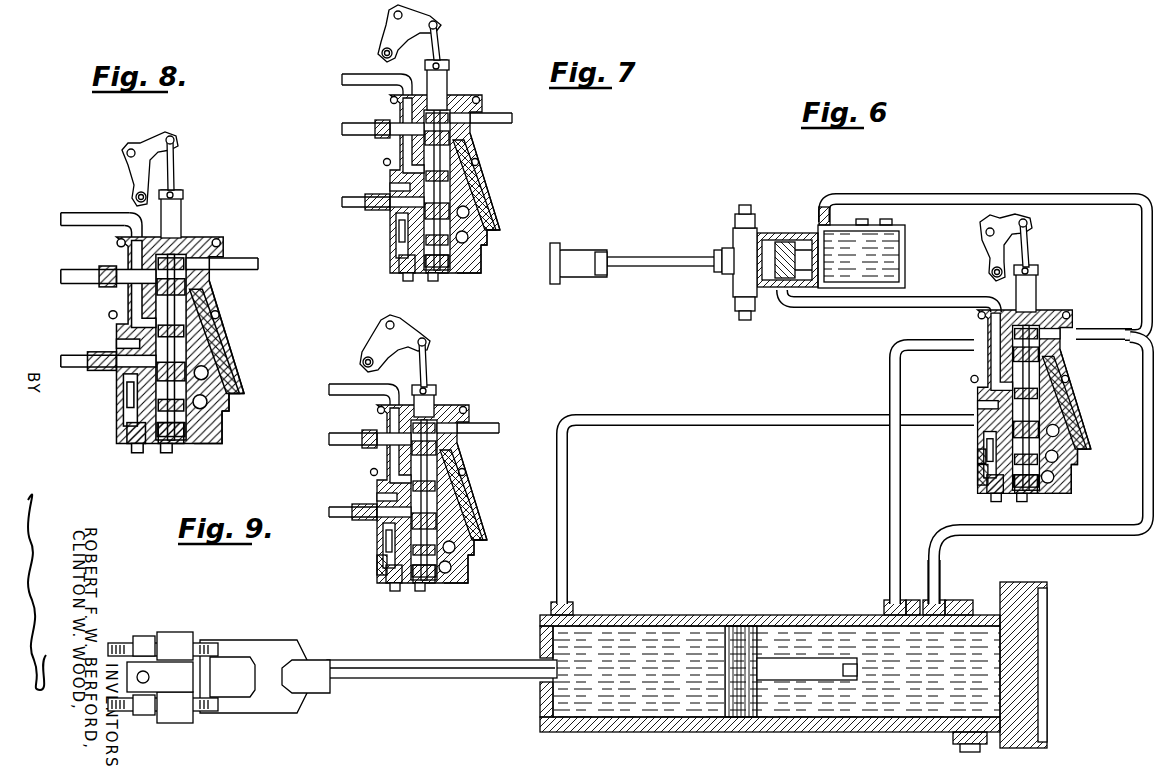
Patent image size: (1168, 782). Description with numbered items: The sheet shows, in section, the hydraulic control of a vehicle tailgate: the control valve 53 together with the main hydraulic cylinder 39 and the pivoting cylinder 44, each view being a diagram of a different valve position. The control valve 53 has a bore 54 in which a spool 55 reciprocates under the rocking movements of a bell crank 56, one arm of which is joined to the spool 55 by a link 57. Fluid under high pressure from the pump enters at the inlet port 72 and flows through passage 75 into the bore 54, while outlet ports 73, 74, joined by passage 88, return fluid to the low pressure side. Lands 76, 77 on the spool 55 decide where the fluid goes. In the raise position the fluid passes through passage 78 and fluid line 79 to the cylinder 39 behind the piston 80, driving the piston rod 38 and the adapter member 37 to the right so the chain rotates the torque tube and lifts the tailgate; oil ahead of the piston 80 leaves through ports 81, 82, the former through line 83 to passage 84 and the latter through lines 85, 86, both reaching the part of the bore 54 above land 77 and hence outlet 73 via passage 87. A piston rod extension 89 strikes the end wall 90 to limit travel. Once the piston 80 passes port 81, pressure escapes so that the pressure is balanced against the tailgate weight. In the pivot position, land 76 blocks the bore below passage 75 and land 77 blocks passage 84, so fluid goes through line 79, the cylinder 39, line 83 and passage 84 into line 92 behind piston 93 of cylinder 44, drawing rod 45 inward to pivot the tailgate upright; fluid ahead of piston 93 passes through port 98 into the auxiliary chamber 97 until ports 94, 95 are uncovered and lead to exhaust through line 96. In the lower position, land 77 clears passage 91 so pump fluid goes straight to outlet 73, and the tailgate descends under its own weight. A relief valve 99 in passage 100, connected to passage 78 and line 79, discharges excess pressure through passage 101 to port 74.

In FIG. 6, the adapter member 37 is at (275, 645).
In FIG. 6, the piston rod 38 is at (423, 667).
In FIG. 6, the main hydraulic cylinder 39 is at (673, 617).
In FIG. 6, the hydraulic cylinder 44 is at (772, 230).
In FIG. 6, the rod 45 is at (648, 257).
In FIG. 9, the control valve 53 is at (387, 570).
In FIG. 6, the control valve 53 is at (997, 500).
In FIG. 8, the bore 54 is at (213, 340).
In FIG. 7, the bore 54 is at (477, 197).
In FIG. 9, the bore 54 is at (437, 410).
In FIG. 6, the bore 54 is at (1040, 307).
In FIG. 8, the spool 55 is at (181, 214).
In FIG. 7, the spool 55 is at (447, 70).
In FIG. 9, the spool 55 is at (437, 390).
In FIG. 6, the spool 55 is at (1040, 273).
In FIG. 8, the bell crank 56 is at (133, 174).
In FIG. 7, the bell crank 56 is at (390, 35).
In FIG. 9, the bell crank 56 is at (380, 345).
In FIG. 6, the bell crank 56 is at (1013, 220).
In FIG. 8, the link 57 is at (177, 170).
In FIG. 7, the link 57 is at (438, 37).
In FIG. 9, the link 57 is at (430, 362).
In FIG. 6, the link 57 is at (1037, 240).
In FIG. 8, the inlet port 72 is at (233, 377).
In FIG. 7, the inlet port 72 is at (490, 210).
In FIG. 9, the inlet port 72 is at (483, 523).
In FIG. 6, the inlet port 72 is at (1085, 422).
In FIG. 8, the outlet port 73 is at (227, 410).
In FIG. 7, the outlet port 73 is at (490, 247).
In FIG. 9, the outlet port 73 is at (477, 540).
In FIG. 6, the outlet port 73 is at (1085, 453).
In FIG. 8, the outlet port 74 is at (218, 428).
In FIG. 7, the outlet port 74 is at (483, 263).
In FIG. 9, the outlet port 74 is at (477, 577).
In FIG. 6, the outlet port 74 is at (1048, 497).
In FIG. 8, the passage 75 is at (187, 367).
In FIG. 7, the passage 75 is at (490, 218).
In FIG. 6, the passage 75 is at (1080, 438).
In FIG. 8, the land 76 is at (140, 390).
In FIG. 7, the land 76 is at (397, 233).
In FIG. 9, the land 76 is at (435, 587).
In FIG. 6, the land 76 is at (990, 457).
In FIG. 8, the land 77 is at (192, 330).
In FIG. 7, the land 77 is at (487, 167).
In FIG. 9, the land 77 is at (475, 513).
In FIG. 6, the land 77 is at (1077, 383).
In FIG. 8, the passage 78 is at (115, 336).
In FIG. 7, the passage 78 is at (407, 193).
In FIG. 9, the passage 78 is at (393, 490).
In FIG. 6, the passage 78 is at (977, 400).
In FIG. 8, the fluid line 79 is at (83, 343).
In FIG. 7, the fluid line 79 is at (357, 192).
In FIG. 9, the fluid line 79 is at (355, 503).
In FIG. 6, the fluid line 79 is at (695, 417).
In FIG. 6, the piston 80 is at (748, 617).
In FIG. 6, the port 81 is at (862, 613).
In FIG. 6, the port 82 is at (963, 620).
In FIG. 8, the line 83 is at (80, 262).
In FIG. 7, the line 83 is at (365, 122).
In FIG. 9, the line 83 is at (352, 432).
In FIG. 6, the line 83 is at (890, 523).
In FIG. 8, the passage 84 is at (97, 262).
In FIG. 7, the passage 84 is at (393, 140).
In FIG. 9, the passage 84 is at (390, 452).
In FIG. 6, the passage 84 is at (975, 350).
In FIG. 6, the line 85 is at (1143, 457).
In FIG. 8, the line 86 is at (255, 256).
In FIG. 7, the line 86 is at (490, 112).
In FIG. 9, the line 86 is at (493, 426).
In FIG. 6, the line 86 is at (1097, 332).
In FIG. 8, the passage 87 is at (233, 383).
In FIG. 7, the passage 87 is at (495, 230).
In FIG. 9, the passage 87 is at (472, 487).
In FIG. 6, the passage 87 is at (1080, 400).
In FIG. 9, the passage 88 is at (457, 563).
In FIG. 6, the passage 88 is at (1080, 483).
In FIG. 6, the piston rod extension 89 is at (797, 660).
In FIG. 6, the end wall 90 is at (1048, 653).
In FIG. 6, the passage 91 is at (980, 487).
In FIG. 8, the line 92 is at (88, 216).
In FIG. 7, the line 92 is at (362, 74).
In FIG. 9, the line 92 is at (355, 382).
In FIG. 6, the line 92 is at (935, 298).
In FIG. 6, the piston 93 is at (793, 273).
In FIG. 6, the port 94 is at (863, 227).
In FIG. 6, the port 95 is at (873, 227).
In FIG. 6, the line 96 is at (1080, 193).
In FIG. 6, the auxiliary chamber 97 is at (852, 227).
In FIG. 6, the port 98 is at (910, 247).
In FIG. 8, the relief valve 99 is at (132, 405).
In FIG. 7, the relief valve 99 is at (400, 247).
In FIG. 9, the relief valve 99 is at (400, 540).
In FIG. 6, the relief valve 99 is at (990, 470).
In FIG. 8, the passage 100 is at (137, 382).
In FIG. 7, the passage 100 is at (393, 220).
In FIG. 9, the passage 100 is at (390, 523).
In FIG. 6, the passage 100 is at (987, 440).
In FIG. 8, the passage 101 is at (123, 440).
In FIG. 7, the passage 101 is at (400, 270).
In FIG. 9, the passage 101 is at (392, 587).
In FIG. 6, the passage 101 is at (1017, 500).